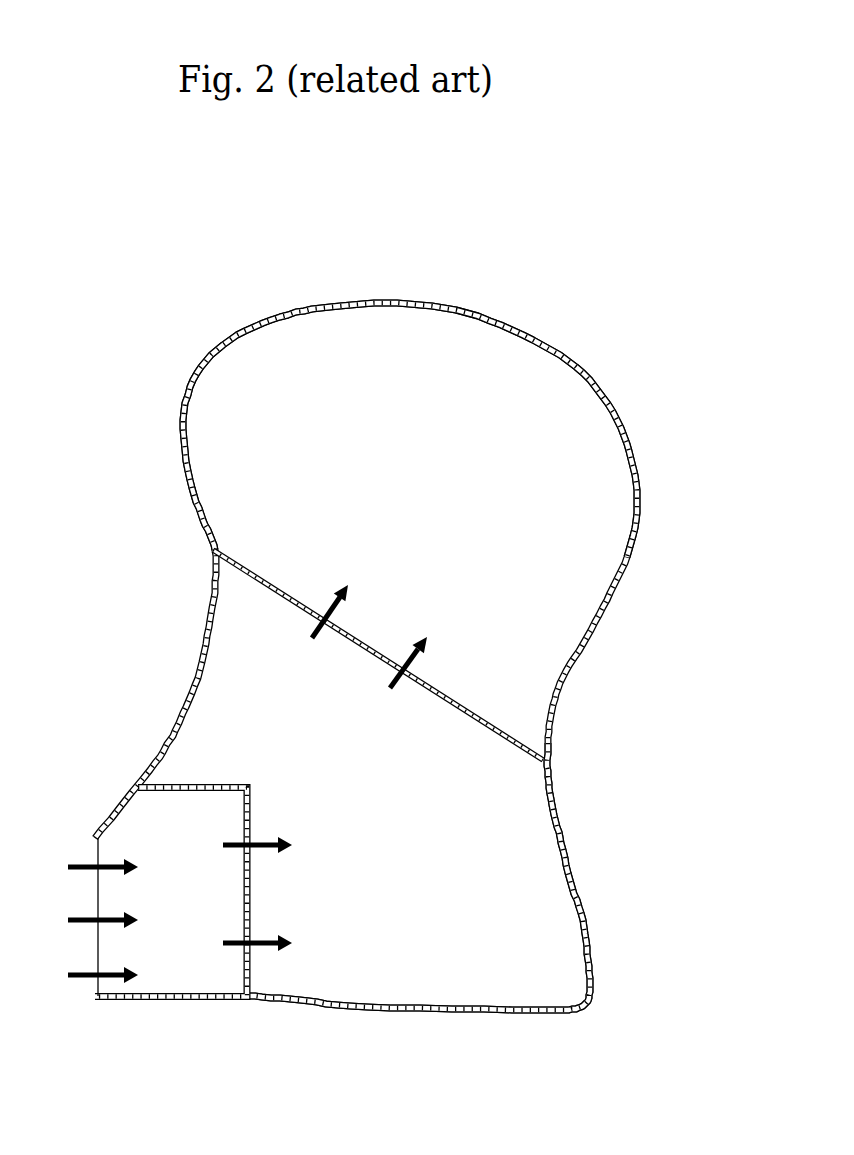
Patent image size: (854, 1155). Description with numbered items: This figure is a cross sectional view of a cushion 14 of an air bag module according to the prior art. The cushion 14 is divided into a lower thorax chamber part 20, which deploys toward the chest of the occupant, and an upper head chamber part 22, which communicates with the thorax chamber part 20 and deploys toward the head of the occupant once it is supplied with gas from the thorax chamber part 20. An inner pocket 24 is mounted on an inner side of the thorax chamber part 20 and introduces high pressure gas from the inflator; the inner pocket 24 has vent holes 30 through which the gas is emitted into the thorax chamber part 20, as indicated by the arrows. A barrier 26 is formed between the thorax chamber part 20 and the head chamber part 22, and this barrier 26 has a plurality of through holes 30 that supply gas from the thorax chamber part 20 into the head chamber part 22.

The cushion 14 is at (213, 323).
The thorax chamber part 20 is at (553, 977).
The head chamber part 22 is at (495, 372).
The inner pocket 24 is at (157, 977).
The barrier 26 is at (515, 748).
The vent holes / through holes 30 is at (337, 620).